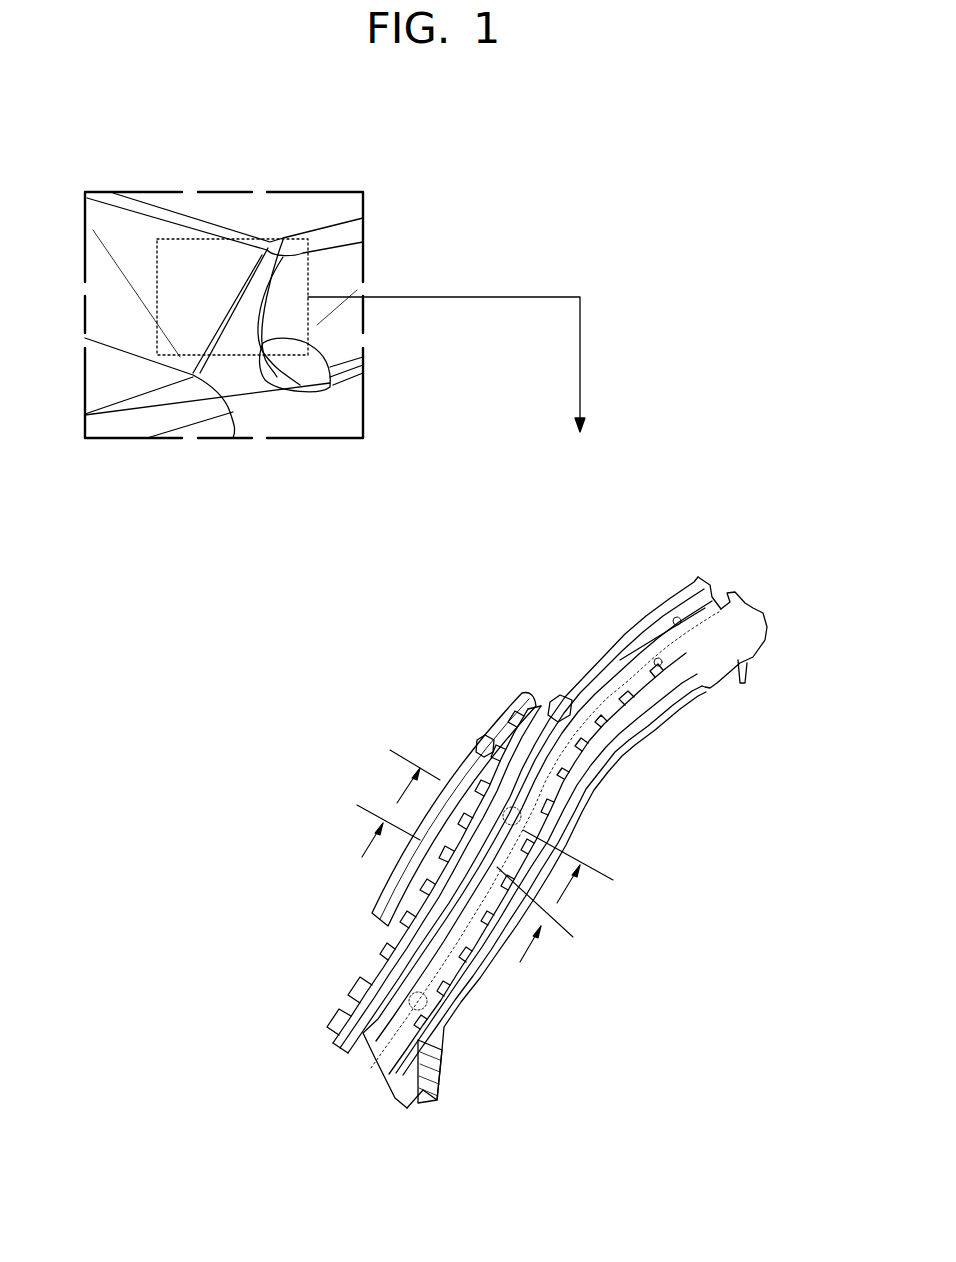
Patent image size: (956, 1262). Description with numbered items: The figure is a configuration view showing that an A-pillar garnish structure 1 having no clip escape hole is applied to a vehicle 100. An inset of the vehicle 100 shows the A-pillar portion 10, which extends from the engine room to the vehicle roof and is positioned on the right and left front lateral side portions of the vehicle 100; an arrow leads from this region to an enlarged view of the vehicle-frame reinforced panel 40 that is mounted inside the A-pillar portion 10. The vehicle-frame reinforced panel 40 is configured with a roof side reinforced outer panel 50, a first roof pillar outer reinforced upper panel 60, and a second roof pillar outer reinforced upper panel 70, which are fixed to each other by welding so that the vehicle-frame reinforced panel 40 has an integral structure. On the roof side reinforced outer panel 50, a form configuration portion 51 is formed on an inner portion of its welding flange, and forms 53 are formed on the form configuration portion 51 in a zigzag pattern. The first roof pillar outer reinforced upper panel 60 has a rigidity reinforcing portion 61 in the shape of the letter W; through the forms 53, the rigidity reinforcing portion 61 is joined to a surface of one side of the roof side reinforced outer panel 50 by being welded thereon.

The A-pillar garnish structure 1 is at (243, 357).
The A-pillar portion 10 is at (250, 297).
The vehicle 100 is at (318, 205).
The vehicle-frame reinforced panel 40 is at (765, 493).
The roof side reinforced outer panel 50 is at (743, 597).
The form configuration portion 51 is at (573, 817).
The forms 53 is at (607, 760).
The first roof pillar outer reinforced upper panel 60 is at (667, 603).
The rigidity reinforcing portion 61 is at (393, 937).
The second roof pillar outer reinforced upper panel 70 is at (515, 702).